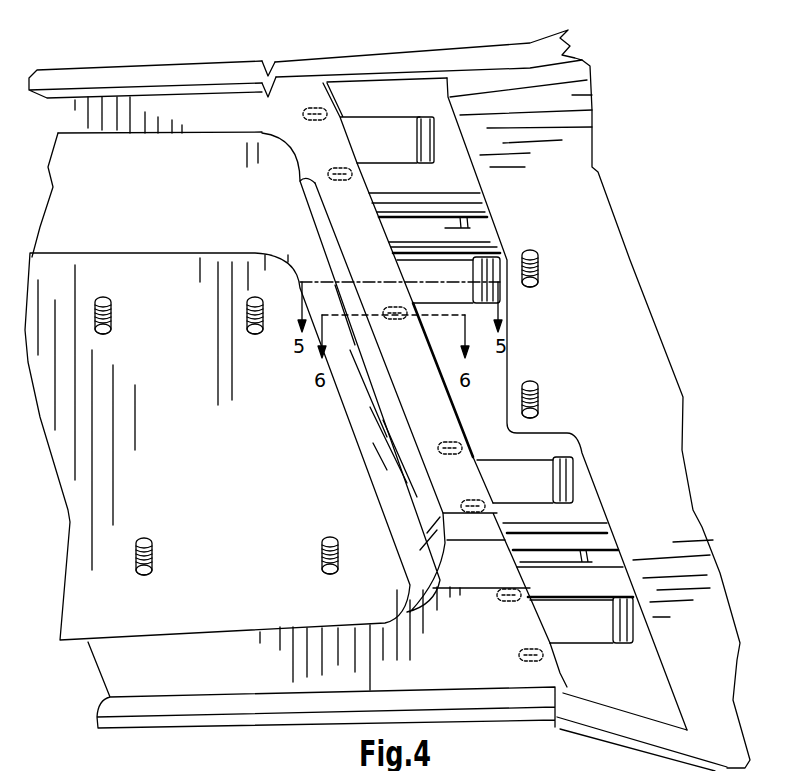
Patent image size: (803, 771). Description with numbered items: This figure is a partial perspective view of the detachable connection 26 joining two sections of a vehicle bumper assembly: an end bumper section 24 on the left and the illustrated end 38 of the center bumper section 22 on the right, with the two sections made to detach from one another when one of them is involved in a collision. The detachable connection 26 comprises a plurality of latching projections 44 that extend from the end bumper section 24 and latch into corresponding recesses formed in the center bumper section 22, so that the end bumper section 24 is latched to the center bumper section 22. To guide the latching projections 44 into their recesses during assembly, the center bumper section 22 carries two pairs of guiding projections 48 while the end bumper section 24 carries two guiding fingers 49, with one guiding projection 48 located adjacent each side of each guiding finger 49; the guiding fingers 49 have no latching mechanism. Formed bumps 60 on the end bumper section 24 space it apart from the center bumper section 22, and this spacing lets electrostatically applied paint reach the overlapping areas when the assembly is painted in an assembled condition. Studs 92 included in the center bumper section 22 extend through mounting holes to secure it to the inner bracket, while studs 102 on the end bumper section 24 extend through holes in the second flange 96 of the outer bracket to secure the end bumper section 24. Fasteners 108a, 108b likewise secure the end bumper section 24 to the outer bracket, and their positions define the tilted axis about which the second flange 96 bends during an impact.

The center bumper section 22 is at (440, 57).
The end bumper section 24 is at (161, 70).
The detachable connection 26 is at (279, 42).
The end of the center bumper section 38 is at (403, 60).
The latching projection 44 is at (377, 143).
The guiding projection 48 is at (447, 198).
The guiding finger 49 is at (445, 230).
The bump 60 is at (304, 113).
The stud 92 is at (542, 273).
The second flange 96 is at (407, 117).
The stud 102 is at (133, 563).
The fastener 108a is at (247, 313).
The fastener 108b is at (320, 557).